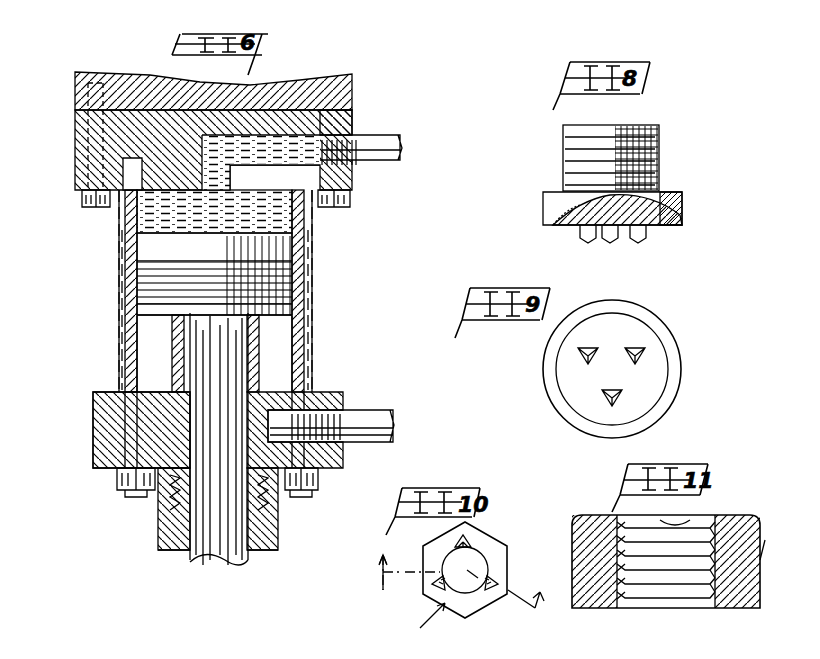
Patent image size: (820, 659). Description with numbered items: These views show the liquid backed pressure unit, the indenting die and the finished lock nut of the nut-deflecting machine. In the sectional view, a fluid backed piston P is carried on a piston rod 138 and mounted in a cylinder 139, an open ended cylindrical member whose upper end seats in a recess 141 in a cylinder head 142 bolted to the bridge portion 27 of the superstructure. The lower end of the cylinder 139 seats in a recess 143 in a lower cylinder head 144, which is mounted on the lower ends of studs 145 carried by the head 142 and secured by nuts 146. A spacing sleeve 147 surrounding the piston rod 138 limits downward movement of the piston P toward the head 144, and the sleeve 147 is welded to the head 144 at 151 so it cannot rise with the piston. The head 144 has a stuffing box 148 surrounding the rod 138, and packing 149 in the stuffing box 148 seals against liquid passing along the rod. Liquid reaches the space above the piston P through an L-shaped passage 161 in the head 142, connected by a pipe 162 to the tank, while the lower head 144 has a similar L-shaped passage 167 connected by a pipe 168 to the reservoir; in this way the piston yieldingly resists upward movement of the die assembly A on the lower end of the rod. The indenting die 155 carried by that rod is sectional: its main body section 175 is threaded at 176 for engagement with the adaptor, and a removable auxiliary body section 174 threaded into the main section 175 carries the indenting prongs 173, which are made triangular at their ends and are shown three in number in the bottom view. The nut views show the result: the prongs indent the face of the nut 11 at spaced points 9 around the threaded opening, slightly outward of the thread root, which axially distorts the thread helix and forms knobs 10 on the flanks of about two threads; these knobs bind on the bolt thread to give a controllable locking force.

In FIG. 6, the bridge portion 27 is at (300, 88).
In FIG. 6, the L-shaped passage 161 is at (340, 100).
In FIG. 6, the pipe 162 is at (385, 135).
In FIG. 6, the cylinder head 142 is at (75, 146).
In FIG. 6, the recess 141 is at (123, 186).
In FIG. 6, the cylinder 139 is at (136, 237).
In FIG. 6, the stud 145 is at (124, 285).
In FIG. 6, the piston rod 138 is at (238, 338).
In FIG. 6, the piston P is at (328, 272).
In FIG. 6, the weld 151 is at (255, 392).
In FIG. 6, the spacing sleeve 147 is at (170, 343).
In FIG. 6, the die assembly A is at (188, 560).
In FIG. 6, the recess 143 is at (93, 405).
In FIG. 6, the cylinder head 144 is at (93, 432).
In FIG. 6, the L-shaped passage 167 is at (330, 392).
In FIG. 6, the pipe 168 is at (362, 412).
In FIG. 6, the nut 146 is at (117, 478).
In FIG. 6, the packing 149 is at (168, 490).
In FIG. 6, the stuffing box 148 is at (165, 525).
In FIG. 8, the thread 176 is at (636, 118).
In FIG. 8, the main body section 175 is at (560, 192).
In FIG. 9, the main body section 175 is at (682, 370).
In FIG. 8, the auxiliary body section 174 is at (560, 205).
In FIG. 9, the auxiliary body section 174 is at (570, 358).
In FIG. 8, the indenting prong 173 is at (584, 238).
In FIG. 9, the indenting prong 173 is at (637, 346).
In FIG. 8, the indenting die 155 is at (698, 206).
In FIG. 9, the indenting die 155 is at (680, 324).
In FIG. 10, the spaced point 9 is at (470, 535).
In FIG. 11, the spaced point 9 is at (728, 516).
In FIG. 11, the knob 10 is at (676, 518).
In FIG. 10, the nut 11 is at (447, 598).
In FIG. 11, the nut 11 is at (770, 533).